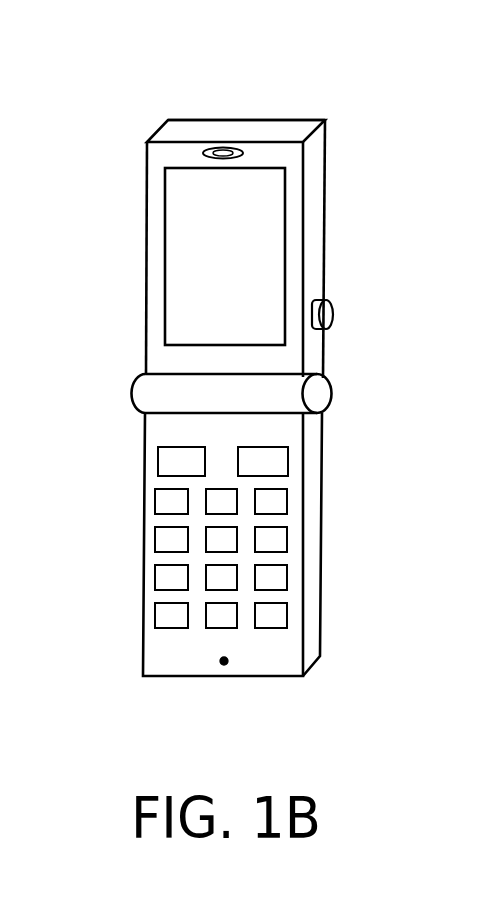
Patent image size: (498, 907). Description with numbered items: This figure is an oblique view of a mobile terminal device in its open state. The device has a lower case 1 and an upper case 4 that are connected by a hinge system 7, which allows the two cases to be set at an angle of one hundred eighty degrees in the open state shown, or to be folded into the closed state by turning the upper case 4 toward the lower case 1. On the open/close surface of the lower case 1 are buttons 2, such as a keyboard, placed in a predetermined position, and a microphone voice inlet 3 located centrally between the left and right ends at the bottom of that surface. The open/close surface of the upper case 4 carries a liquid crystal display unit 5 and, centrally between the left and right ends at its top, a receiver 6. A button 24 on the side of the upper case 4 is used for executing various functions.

The lower case 1 is at (312, 644).
The buttons 2 is at (288, 539).
The microphone voice inlet 3 is at (224, 665).
The upper case 4 is at (185, 128).
The liquid crystal display unit 5 is at (262, 214).
The receiver 6 is at (222, 150).
The hinge system 7 is at (332, 397).
The button 24 is at (335, 311).